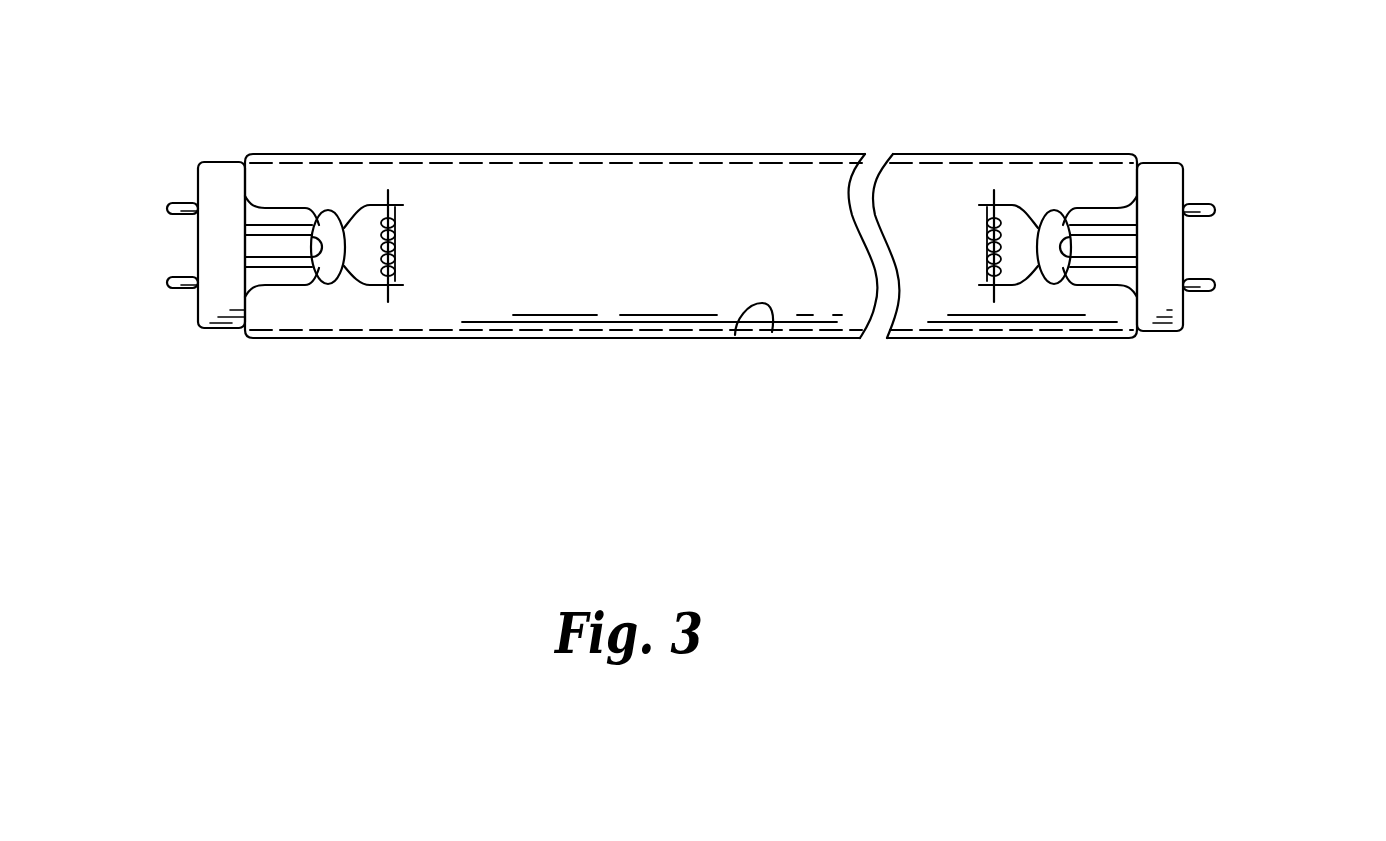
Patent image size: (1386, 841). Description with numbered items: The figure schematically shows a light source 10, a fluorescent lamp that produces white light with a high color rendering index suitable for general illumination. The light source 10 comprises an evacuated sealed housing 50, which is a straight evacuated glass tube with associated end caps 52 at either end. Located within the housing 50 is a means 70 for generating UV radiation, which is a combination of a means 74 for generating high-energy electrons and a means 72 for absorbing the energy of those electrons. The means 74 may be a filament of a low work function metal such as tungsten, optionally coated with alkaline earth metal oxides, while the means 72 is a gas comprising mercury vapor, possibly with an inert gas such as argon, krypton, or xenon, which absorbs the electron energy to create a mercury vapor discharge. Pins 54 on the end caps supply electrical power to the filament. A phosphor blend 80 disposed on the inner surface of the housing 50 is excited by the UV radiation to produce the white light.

The light source 10 is at (752, 114).
The evacuated sealed housing 50 is at (833, 340).
The end caps 52 is at (203, 330).
The pins 54 is at (167, 208).
The means for generating UV radiation 70 is at (691, 355).
The means for absorbing the energy of the high-energy electrons 72 is at (543, 293).
The means for generating high-energy electrons 74 is at (397, 275).
The phosphor blend 80 is at (735, 335).